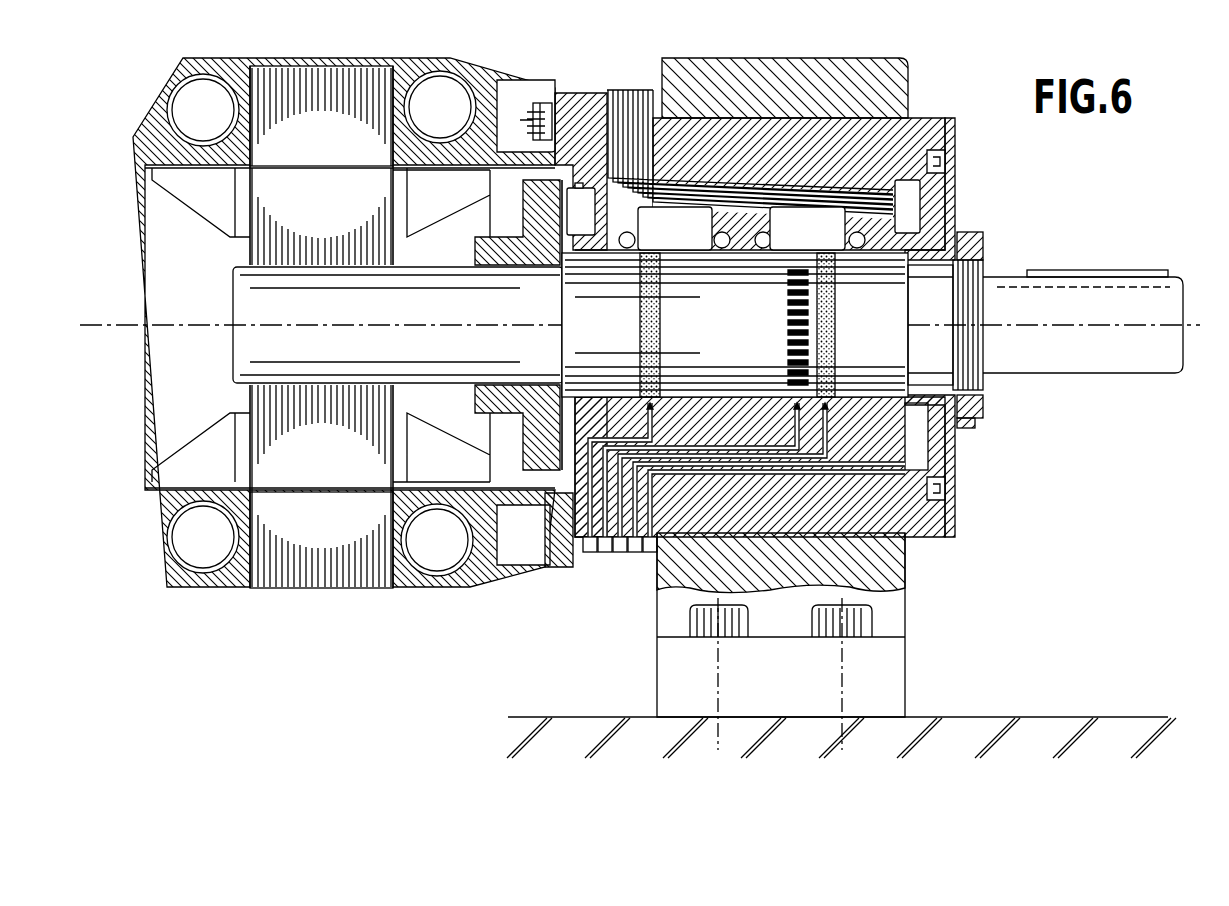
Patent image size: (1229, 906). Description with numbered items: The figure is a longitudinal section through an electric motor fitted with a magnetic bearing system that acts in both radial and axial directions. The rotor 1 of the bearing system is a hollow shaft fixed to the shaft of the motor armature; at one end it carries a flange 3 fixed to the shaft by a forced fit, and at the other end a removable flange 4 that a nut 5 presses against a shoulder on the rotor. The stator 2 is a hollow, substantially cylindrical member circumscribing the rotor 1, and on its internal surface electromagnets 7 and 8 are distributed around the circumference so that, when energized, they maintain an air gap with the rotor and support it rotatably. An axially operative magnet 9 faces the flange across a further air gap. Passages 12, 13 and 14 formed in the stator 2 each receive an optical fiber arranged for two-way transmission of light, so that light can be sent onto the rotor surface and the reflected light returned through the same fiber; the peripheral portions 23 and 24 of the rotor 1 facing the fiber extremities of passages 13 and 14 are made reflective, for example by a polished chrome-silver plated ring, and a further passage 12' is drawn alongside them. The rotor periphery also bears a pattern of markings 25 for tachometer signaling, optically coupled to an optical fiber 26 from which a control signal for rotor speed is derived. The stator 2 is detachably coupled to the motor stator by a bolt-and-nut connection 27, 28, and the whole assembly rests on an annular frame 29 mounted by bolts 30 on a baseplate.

The rotor 1 is at (872, 327).
The stator 2 is at (767, 150).
The flange 3 is at (495, 262).
The removable flange 4 is at (955, 200).
The nut 5 is at (983, 245).
The electromagnet 7 is at (686, 215).
The electromagnet 8 is at (800, 215).
The axially operative magnet 9 is at (582, 190).
The passage 12 is at (572, 580).
The terminal 12' is at (637, 572).
The passage 13 is at (603, 555).
The passage 14 is at (634, 556).
The peripheral portion 23 is at (658, 343).
The peripheral portion 24 is at (832, 343).
The pattern of markings 25 is at (803, 355).
The optical fiber 26 is at (618, 556).
The bolt-and-nut connection 27 is at (532, 103).
The bolt-and-nut connection 28 is at (546, 105).
The annular frame 29 is at (730, 82).
The bolts 30 is at (822, 632).